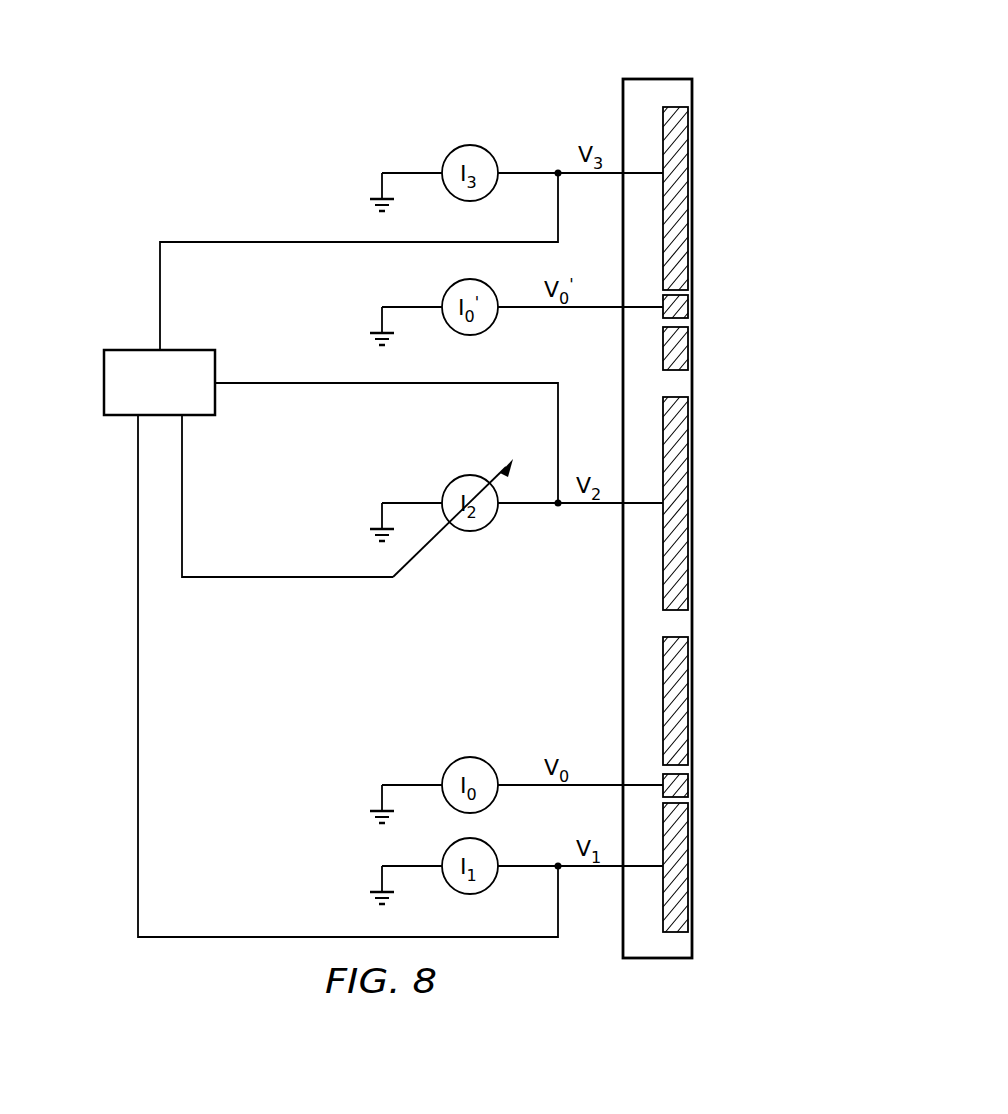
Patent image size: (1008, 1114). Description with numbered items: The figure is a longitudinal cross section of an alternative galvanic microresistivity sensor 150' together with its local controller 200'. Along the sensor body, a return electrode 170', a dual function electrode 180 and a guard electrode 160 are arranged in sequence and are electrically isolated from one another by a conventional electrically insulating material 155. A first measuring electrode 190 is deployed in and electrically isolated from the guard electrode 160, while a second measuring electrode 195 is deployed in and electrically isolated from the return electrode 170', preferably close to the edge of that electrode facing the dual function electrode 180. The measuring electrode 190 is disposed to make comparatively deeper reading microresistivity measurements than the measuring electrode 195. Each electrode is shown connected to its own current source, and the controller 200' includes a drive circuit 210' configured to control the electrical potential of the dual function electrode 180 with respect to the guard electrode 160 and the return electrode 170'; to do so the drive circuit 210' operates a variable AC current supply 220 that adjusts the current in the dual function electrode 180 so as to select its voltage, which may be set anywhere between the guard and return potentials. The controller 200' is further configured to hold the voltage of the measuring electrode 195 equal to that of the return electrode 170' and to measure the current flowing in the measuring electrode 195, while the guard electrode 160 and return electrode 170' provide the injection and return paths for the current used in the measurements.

The controller 200' is at (348, 498).
The sensor 150' is at (698, 510).
The electrically insulating material 155 is at (652, 948).
The return electrode 170' is at (718, 238).
The measuring electrode 195 is at (692, 308).
The dual function electrode 180 is at (692, 503).
The guard electrode 160 is at (692, 705).
The measuring electrode 190 is at (692, 787).
The drive circuit 210' is at (121, 382).
The variable AC current supply 220 is at (425, 547).